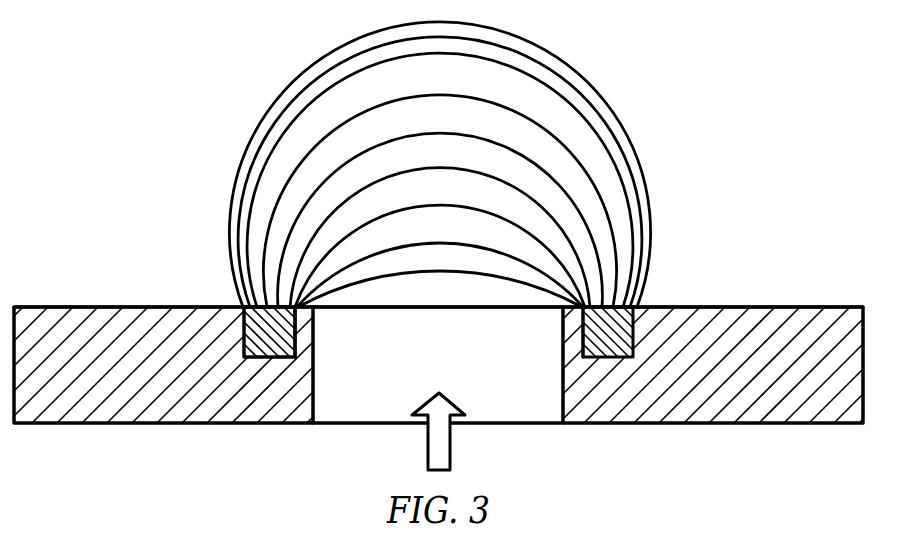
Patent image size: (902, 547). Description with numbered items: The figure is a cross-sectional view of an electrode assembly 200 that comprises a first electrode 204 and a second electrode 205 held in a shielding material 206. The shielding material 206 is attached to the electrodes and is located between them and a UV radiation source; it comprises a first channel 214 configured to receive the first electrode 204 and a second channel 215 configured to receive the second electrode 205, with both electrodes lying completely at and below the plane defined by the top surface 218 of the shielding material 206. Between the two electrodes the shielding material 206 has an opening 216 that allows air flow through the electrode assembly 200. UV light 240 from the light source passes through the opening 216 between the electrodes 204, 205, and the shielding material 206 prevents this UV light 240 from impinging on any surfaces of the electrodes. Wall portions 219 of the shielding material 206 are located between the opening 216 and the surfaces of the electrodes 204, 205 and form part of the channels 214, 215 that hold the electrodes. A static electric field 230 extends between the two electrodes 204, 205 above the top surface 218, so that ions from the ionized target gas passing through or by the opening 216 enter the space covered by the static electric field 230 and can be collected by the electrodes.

The electrode assembly 200 is at (139, 202).
The first electrode 204 is at (610, 350).
The second electrode 205 is at (270, 348).
The shielding material 206 is at (113, 408).
The first channel 214 is at (637, 325).
The second channel 215 is at (243, 335).
The opening 216 is at (354, 412).
The top surface 218 is at (86, 297).
The wall portions 219 is at (307, 331).
The static electric field 230 is at (562, 141).
The UV light 240 is at (452, 441).